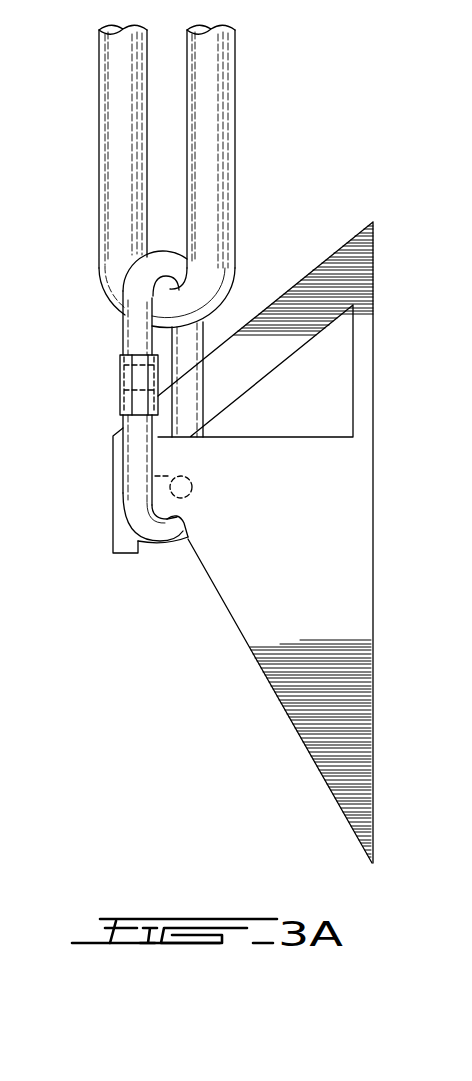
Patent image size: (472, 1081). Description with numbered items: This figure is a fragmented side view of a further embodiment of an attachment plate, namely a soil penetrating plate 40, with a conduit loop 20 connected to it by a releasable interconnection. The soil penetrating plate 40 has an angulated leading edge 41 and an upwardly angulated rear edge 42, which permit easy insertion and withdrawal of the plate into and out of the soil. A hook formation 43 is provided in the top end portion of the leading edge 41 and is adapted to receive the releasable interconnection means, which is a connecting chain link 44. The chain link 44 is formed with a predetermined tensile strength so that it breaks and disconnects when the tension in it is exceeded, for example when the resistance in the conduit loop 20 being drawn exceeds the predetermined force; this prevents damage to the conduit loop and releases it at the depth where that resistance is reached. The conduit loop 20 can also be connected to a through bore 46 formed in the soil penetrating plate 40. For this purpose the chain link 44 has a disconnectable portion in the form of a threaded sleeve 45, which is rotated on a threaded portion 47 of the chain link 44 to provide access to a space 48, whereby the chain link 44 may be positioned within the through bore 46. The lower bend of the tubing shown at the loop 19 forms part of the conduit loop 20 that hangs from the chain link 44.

The tubing loop bend 19 is at (124, 256).
The conduit loop 20 is at (123, 157).
The soil penetrating plate 40 is at (284, 632).
The angulated leading edge 41 is at (294, 728).
The upwardly angulated rear edge 42 is at (293, 288).
The hook formation 43 is at (152, 545).
The connecting chain link 44 is at (140, 333).
The threaded sleeve 45 is at (120, 396).
The through bore 46 is at (190, 500).
The threaded portion 47 is at (137, 424).
The space 48 is at (120, 380).